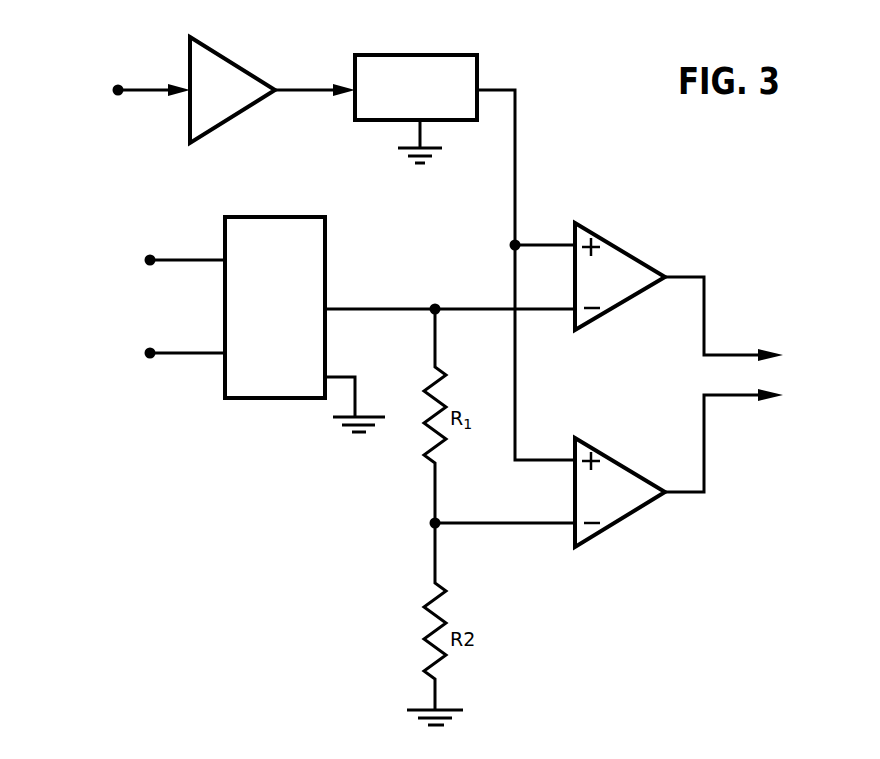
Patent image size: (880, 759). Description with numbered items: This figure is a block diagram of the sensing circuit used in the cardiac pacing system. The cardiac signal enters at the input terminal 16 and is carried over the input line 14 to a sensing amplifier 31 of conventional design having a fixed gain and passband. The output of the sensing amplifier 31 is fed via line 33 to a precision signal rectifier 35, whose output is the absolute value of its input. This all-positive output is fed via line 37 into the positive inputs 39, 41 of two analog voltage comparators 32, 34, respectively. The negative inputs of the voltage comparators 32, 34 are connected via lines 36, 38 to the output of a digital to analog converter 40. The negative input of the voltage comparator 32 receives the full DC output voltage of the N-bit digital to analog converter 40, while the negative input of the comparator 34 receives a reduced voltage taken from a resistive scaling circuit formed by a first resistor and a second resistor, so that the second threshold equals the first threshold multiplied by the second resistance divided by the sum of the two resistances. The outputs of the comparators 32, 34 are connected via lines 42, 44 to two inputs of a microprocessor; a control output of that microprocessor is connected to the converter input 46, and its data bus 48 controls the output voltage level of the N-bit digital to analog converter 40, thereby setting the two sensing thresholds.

The cardiac signal input line 14 is at (147, 88).
The input terminal 16 is at (124, 94).
The sensing amplifier 31 is at (238, 64).
The line 33 is at (310, 88).
The precision signal rectifier 35 is at (432, 58).
The line 37 is at (518, 156).
The positive input 39 is at (607, 238).
The analog voltage comparator 32 is at (600, 263).
The line 42 is at (706, 302).
The digital to analog converter 40 is at (300, 217).
The DAC input 46 is at (192, 256).
The data bus 48 is at (196, 358).
The line 36 is at (470, 307).
The line 38 is at (530, 526).
The positive input 41 is at (600, 446).
The analog voltage comparator 34 is at (620, 490).
The line 44 is at (726, 398).